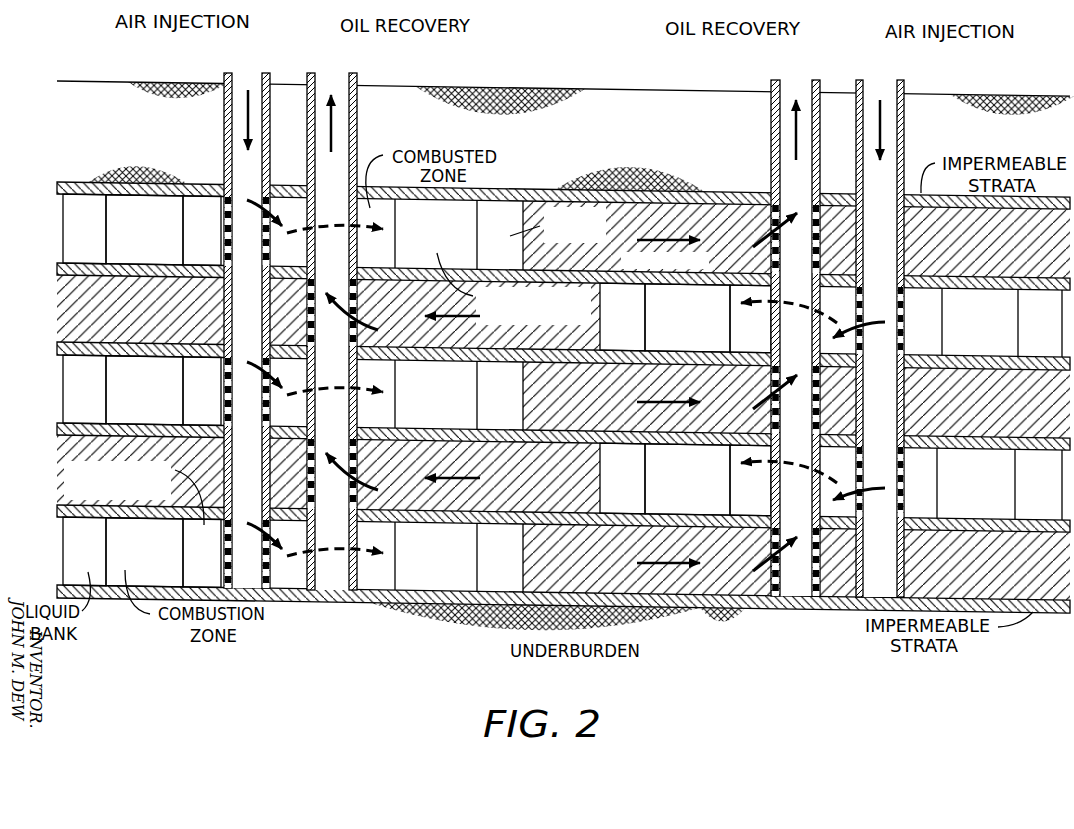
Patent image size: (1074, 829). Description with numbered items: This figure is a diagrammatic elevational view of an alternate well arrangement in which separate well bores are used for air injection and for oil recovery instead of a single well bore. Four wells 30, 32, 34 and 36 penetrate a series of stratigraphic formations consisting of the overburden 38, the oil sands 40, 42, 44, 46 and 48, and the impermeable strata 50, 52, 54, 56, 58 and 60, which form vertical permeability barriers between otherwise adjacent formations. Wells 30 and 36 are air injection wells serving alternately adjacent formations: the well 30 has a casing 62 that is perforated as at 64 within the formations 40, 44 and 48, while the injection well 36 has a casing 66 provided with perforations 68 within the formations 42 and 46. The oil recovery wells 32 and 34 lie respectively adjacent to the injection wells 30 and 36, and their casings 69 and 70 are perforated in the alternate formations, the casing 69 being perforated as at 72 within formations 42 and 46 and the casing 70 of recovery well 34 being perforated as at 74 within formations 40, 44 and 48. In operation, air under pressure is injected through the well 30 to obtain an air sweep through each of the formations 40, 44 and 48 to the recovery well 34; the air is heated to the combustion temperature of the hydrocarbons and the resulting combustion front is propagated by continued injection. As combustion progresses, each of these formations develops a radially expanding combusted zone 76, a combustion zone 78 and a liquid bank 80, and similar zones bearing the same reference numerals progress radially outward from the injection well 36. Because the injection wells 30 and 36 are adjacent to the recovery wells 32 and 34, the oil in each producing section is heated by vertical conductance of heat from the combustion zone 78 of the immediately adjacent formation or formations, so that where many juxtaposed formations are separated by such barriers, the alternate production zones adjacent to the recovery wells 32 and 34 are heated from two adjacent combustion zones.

The air injection well 30 is at (231, 315).
The oil recovery well 32 is at (356, 316).
The oil recovery well 34 is at (778, 323).
The air injection well 36 is at (906, 323).
The overburden 38 is at (75, 133).
The oil sand 40 is at (78, 242).
The oil sand 42 is at (72, 311).
The oil sand 44 is at (72, 402).
The oil sand 46 is at (65, 488).
The oil sand 48 is at (70, 560).
The impermeable strata 50 is at (1000, 210).
The impermeable strata 52 is at (995, 278).
The impermeable strata 54 is at (990, 368).
The impermeable strata 56 is at (990, 438).
The impermeable strata 58 is at (990, 528).
The impermeable strata 60 is at (990, 599).
The casing 62 is at (222, 74).
The perforations 64 is at (222, 557).
The casing 66 is at (906, 90).
The perforations 68 is at (898, 482).
The casing 69 is at (358, 80).
The casing 70 is at (771, 84).
The perforations 72 is at (357, 463).
The perforations 74 is at (771, 555).
The combusted zone 76 is at (477, 396).
The combustion zone 78 is at (418, 395).
The liquid bank 80 is at (354, 394).